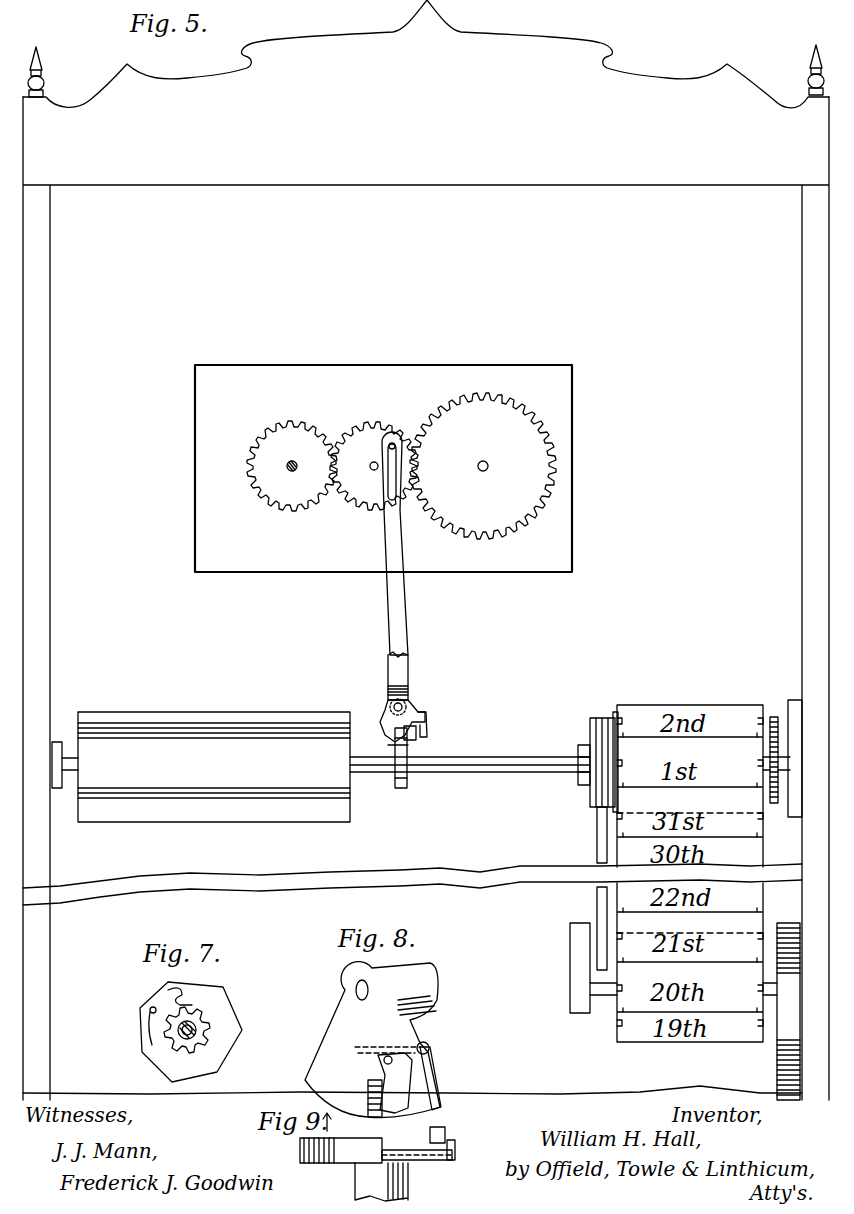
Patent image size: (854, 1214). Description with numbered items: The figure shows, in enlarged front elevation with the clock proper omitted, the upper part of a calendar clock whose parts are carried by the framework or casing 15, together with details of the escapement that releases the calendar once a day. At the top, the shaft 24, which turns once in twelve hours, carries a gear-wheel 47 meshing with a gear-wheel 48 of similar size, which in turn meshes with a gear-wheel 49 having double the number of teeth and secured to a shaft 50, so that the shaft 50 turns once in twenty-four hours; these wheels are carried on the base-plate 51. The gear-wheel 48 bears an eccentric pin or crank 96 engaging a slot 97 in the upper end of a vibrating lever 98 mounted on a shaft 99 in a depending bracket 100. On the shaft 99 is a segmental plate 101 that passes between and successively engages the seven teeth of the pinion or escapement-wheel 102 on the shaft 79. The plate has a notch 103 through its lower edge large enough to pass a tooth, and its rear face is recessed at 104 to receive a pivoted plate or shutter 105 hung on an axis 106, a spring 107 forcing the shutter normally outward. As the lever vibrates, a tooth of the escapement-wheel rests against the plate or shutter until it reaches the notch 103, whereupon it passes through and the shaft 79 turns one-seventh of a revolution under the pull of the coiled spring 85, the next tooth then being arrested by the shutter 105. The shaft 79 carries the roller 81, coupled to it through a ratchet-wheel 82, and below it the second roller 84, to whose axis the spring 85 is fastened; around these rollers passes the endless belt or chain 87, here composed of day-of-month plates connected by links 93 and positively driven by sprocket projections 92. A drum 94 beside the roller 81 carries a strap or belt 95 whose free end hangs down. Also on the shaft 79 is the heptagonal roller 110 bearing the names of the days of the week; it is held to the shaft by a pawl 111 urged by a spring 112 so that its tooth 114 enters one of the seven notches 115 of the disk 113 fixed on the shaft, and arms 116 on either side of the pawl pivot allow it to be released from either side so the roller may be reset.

In FIG. 5, the framework or casing 15 is at (46, 634).
In FIG. 5, the shaft or arbor 24 is at (287, 466).
In FIG. 5, the gear-wheel 47 is at (292, 511).
In FIG. 5, the gear-wheel 48 is at (370, 510).
In FIG. 5, the gear-wheel 49 is at (496, 527).
In FIG. 5, the shaft 50 is at (489, 462).
In FIG. 5, the base-plate 51 is at (536, 557).
In FIG. 5, the eccentric pin or crank 96 is at (397, 432).
In FIG. 5, the slot 97 is at (400, 505).
In FIG. 5, the vibrating lever 98 is at (406, 611).
In FIG. 5, the depending bracket 100 is at (410, 670).
In FIG. 5, the segmental plate 101 is at (384, 726).
In FIG. 8, the segmental plate 101 is at (323, 1069).
In FIG. 9, the segmental plate 101 is at (354, 1169).
In FIG. 5, the shaft 99 is at (409, 707).
In FIG. 5, the axis 106 is at (427, 722).
In FIG. 8, the axis 106 is at (430, 1049).
In FIG. 9, the axis 106 is at (456, 1152).
In FIG. 5, the spring 107 is at (420, 736).
In FIG. 8, the spring 107 is at (440, 1096).
In FIG. 9, the spring 107 is at (446, 1141).
In FIG. 5, the arms 116 is at (398, 744).
In FIG. 7, the arms 116 is at (200, 993).
In FIG. 5, the roller 110 is at (352, 802).
In FIG. 5, the pinion or escapement-wheel 102 is at (408, 786).
In FIG. 5, the shaft 79 is at (491, 773).
In FIG. 7, the shaft 79 is at (190, 1034).
In FIG. 5, the roller 81 is at (610, 712).
In FIG. 5, the ratchet-wheel 82 is at (582, 778).
In FIG. 5, the sprocket projections 92 is at (640, 764).
In FIG. 5, the drum 94 is at (592, 795).
In FIG. 5, the strap or belt 95 is at (597, 832).
In FIG. 5, the links 93 is at (765, 840).
In FIG. 5, the endless belt or chain 87 is at (765, 900).
In FIG. 5, the second roller 84 is at (612, 1040).
In FIG. 5, the coiled spring 85 is at (777, 1046).
In FIG. 7, the pawl 111 is at (156, 1003).
In FIG. 7, the spring 112 is at (172, 986).
In FIG. 7, the tooth 114 is at (206, 1010).
In FIG. 7, the notched or recessed disk 113 is at (210, 1027).
In FIG. 7, the notches 115 is at (214, 1040).
In FIG. 8, the pivoted plate or shutter 105 is at (436, 1086).
In FIG. 9, the pivoted plate or shutter 105 is at (430, 1162).
In FIG. 8, the recess 104 is at (420, 1110).
In FIG. 8, the notch or recess 103 is at (383, 1112).